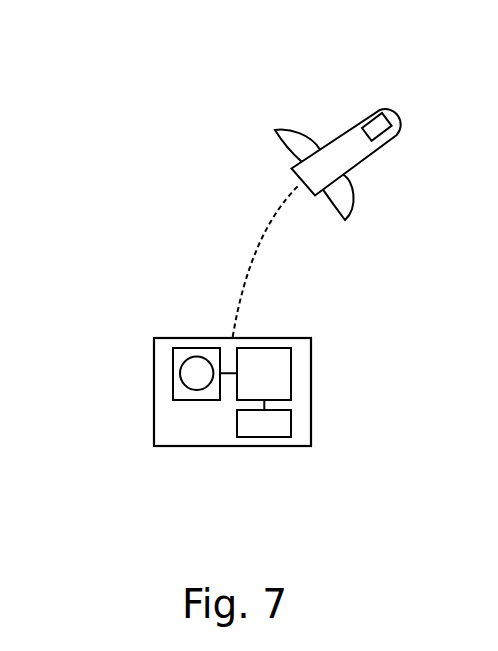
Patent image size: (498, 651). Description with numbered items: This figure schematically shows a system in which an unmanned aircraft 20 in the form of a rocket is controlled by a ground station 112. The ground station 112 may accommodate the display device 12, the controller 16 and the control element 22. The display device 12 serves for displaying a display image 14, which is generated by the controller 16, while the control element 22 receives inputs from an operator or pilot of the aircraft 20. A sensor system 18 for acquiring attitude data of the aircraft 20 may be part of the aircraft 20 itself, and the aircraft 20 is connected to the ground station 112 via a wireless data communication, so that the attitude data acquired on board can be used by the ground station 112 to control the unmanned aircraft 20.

The display device 12 is at (247, 387).
The display image 14 is at (183, 363).
The controller 16 is at (292, 354).
The sensor system 18 is at (375, 113).
The aircraft 20 is at (376, 121).
The control element 22 is at (275, 437).
The ground station 112 is at (311, 391).